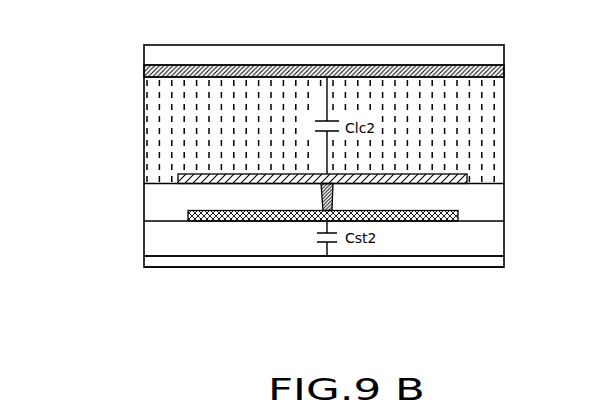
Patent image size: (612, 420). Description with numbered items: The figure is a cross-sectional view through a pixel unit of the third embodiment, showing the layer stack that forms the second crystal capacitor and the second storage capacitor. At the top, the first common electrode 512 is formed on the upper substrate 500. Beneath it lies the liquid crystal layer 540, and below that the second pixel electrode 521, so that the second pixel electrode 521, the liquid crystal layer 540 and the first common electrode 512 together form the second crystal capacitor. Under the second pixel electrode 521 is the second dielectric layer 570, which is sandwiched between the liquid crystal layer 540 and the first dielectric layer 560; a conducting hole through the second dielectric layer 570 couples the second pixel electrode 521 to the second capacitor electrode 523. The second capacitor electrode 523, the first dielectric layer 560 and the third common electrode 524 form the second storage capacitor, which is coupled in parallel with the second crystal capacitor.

The upper substrate 500 is at (504, 55).
The first common electrode 512 is at (144, 72).
The liquid crystal layer 540 is at (504, 120).
The second pixel electrode 521 is at (178, 174).
The second dielectric layer 570 is at (504, 205).
The second capacitor electrode 523 is at (188, 211).
The first dielectric layer 560 is at (504, 241).
The third common electrode 524 is at (144, 259).